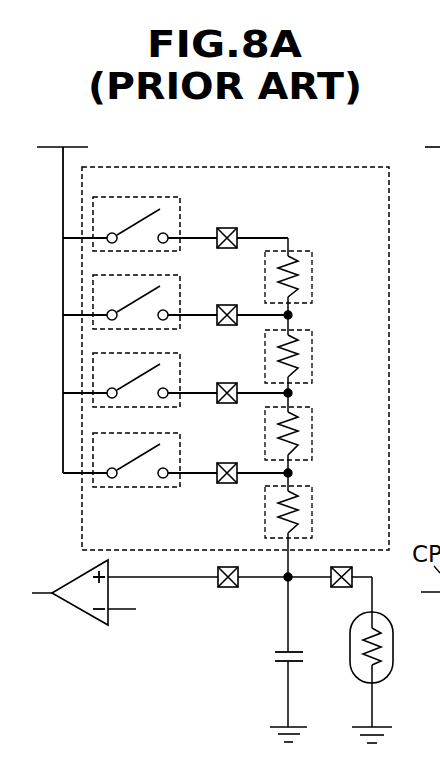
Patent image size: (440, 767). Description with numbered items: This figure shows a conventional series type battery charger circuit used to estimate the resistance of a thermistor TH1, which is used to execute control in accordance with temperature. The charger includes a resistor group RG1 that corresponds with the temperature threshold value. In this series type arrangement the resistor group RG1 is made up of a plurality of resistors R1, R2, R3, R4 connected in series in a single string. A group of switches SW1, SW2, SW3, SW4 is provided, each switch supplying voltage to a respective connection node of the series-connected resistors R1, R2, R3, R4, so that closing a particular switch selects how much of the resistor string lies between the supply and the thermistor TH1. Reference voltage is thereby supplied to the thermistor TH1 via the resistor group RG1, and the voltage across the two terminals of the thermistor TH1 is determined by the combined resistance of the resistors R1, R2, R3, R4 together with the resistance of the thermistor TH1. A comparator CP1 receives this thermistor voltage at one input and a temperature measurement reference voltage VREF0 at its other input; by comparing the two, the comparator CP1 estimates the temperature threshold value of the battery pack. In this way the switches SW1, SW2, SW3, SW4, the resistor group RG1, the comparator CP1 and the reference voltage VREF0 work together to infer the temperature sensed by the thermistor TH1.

The resistor group RG1 is at (350, 166).
The switch SW1 is at (182, 218).
The switch SW2 is at (182, 296).
The switch SW3 is at (182, 374).
The switch SW4 is at (182, 452).
The resistor R1 is at (313, 261).
The resistor R2 is at (313, 340).
The resistor R3 is at (313, 419).
The resistor R4 is at (313, 496).
The comparator CP1 is at (72, 578).
The temperature measurement reference voltage VREF0 is at (164, 611).
The thermistor TH1 is at (393, 668).